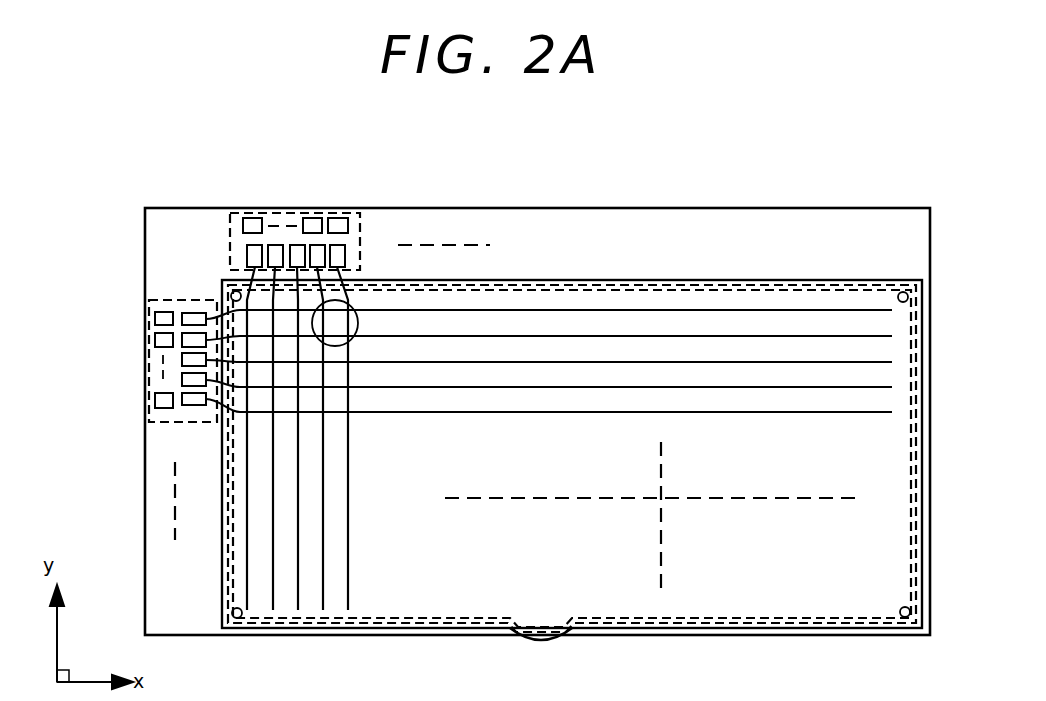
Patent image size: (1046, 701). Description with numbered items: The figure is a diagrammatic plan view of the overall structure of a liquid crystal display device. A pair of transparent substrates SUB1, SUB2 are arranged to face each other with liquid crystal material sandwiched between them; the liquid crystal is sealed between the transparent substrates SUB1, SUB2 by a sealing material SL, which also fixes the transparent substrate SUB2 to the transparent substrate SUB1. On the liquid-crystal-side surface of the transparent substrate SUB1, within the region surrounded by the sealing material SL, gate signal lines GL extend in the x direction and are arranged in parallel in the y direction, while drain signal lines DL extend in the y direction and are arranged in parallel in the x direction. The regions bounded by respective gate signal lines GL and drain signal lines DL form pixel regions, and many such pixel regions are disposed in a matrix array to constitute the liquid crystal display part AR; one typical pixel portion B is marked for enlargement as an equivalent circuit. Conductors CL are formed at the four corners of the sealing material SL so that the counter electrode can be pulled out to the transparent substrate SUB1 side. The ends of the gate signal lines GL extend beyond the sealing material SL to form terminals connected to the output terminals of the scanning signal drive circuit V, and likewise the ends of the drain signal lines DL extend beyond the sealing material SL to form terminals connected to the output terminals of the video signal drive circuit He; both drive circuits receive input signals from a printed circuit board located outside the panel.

The transparent substrate SUB1 is at (735, 207).
The transparent substrate SUB2 is at (628, 279).
The sealing material SL is at (602, 622).
The conductor CL is at (233, 291).
The video signal drive circuit He is at (263, 213).
The drain signal line DL is at (349, 493).
The gate signal line GL is at (578, 413).
The scanning signal drive circuit V is at (148, 405).
The pixel portion B is at (358, 325).
The liquid crystal display part AR is at (651, 518).